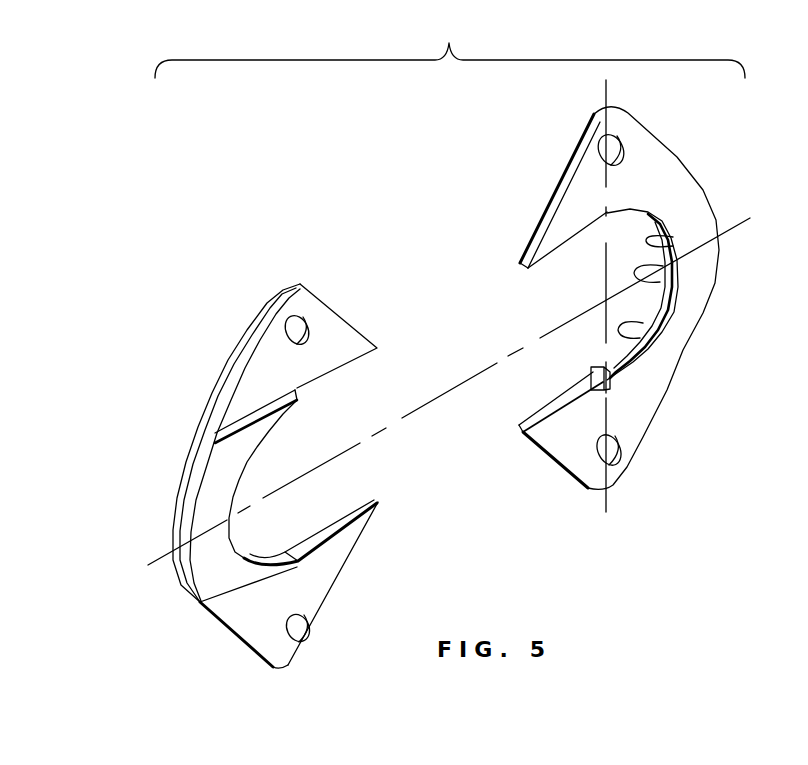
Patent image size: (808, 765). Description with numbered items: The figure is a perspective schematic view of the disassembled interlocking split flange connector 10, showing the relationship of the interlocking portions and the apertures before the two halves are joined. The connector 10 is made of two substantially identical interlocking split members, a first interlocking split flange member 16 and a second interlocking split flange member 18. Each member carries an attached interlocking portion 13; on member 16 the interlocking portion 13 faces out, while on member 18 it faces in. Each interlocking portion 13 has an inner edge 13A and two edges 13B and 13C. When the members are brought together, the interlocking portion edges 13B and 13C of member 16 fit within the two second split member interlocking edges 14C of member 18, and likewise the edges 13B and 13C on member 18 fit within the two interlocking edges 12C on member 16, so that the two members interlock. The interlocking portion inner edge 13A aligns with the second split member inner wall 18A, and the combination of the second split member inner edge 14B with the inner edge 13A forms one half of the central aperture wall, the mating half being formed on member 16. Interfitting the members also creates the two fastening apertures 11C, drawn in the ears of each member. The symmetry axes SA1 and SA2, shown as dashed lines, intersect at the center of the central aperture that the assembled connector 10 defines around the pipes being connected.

The interlocking split flange connector 10 is at (463, 384).
The fastening apertures 11C is at (290, 318).
The second split member interlocking edges 12C is at (338, 367).
The interlocking portion 13 is at (217, 465).
The interlocking portion inner edge 13A is at (240, 476).
The interlocking portion edge 13B is at (238, 612).
The interlocking portion edge 13C is at (242, 413).
The second split member inner edge 14B is at (650, 215).
The second split member interlocking edges 14C is at (558, 247).
The first interlocking split flange member 16 is at (207, 331).
The second interlocking split flange member 18 is at (700, 130).
The second split member inner wall 18A is at (680, 290).
The symmetry axis SA1 is at (733, 229).
The symmetry axis SA2 is at (603, 498).